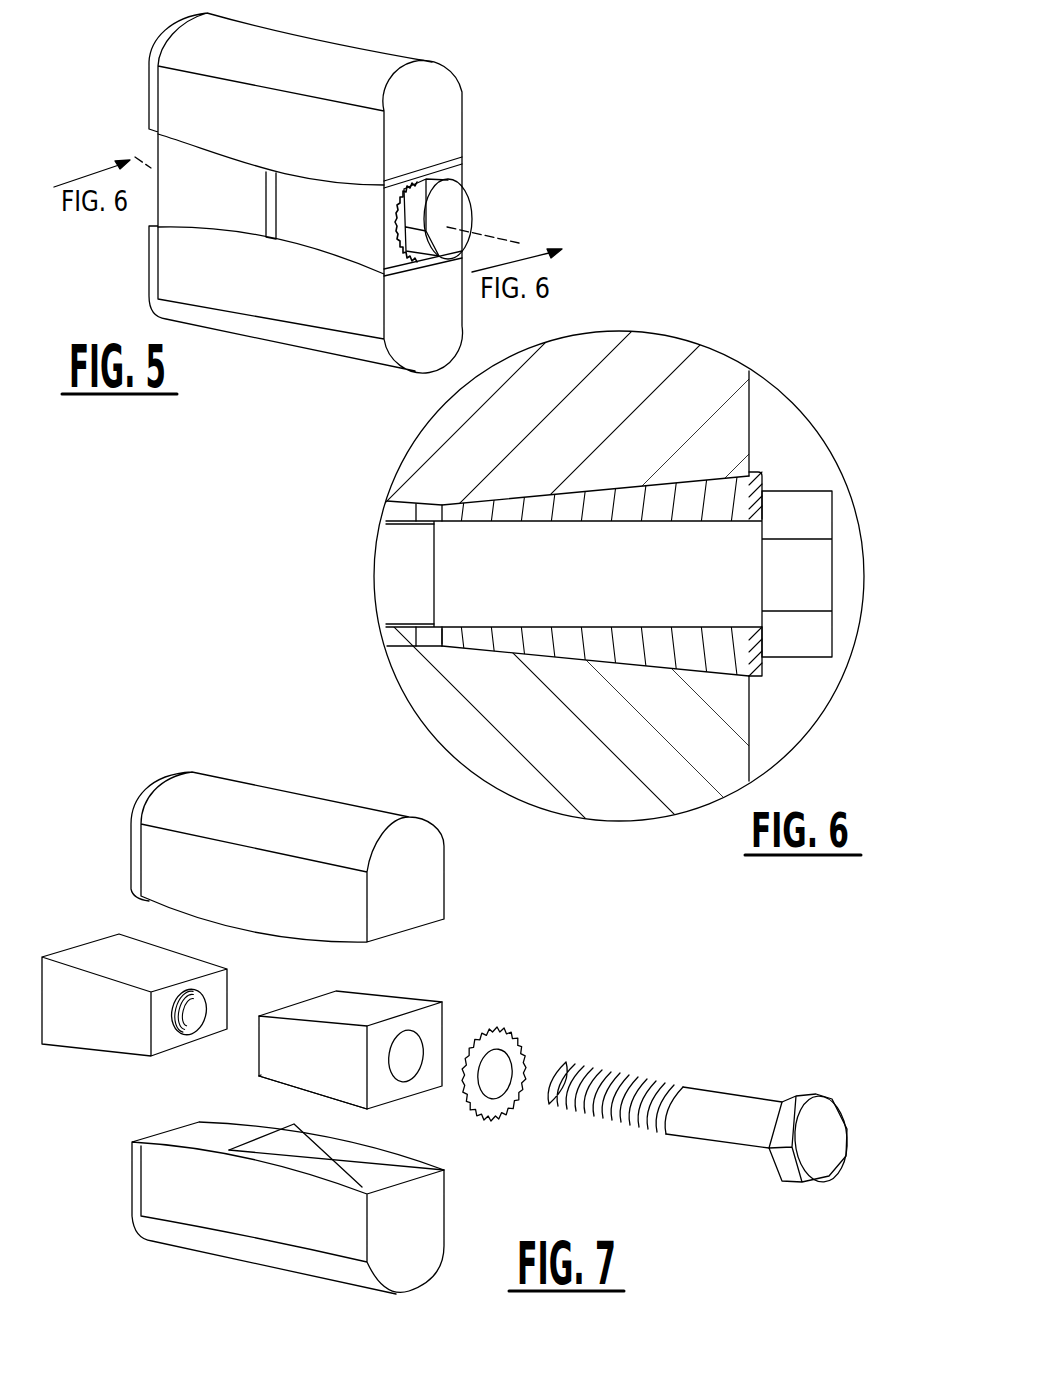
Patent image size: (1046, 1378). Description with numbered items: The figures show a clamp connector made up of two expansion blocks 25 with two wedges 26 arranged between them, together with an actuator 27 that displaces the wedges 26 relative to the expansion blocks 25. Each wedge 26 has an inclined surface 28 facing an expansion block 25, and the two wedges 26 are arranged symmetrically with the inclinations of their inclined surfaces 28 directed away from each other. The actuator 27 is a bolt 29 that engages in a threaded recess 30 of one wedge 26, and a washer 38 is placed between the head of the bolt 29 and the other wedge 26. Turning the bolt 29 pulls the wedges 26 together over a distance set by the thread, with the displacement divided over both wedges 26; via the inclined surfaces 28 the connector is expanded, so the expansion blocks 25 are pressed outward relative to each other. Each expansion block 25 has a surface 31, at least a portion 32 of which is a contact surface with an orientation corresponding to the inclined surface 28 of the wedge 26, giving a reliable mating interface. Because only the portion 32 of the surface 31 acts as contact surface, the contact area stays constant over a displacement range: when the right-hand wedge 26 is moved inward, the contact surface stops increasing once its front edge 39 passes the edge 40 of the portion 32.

In FIG. 5, the expansion block 25 is at (204, 109).
In FIG. 6, the expansion block 25 is at (467, 593).
In FIG. 7, the expansion block 25 is at (167, 853).
In FIG. 5, the wedge 26 is at (217, 200).
In FIG. 6, the wedge 26 is at (398, 513).
In FIG. 7, the wedge 26 is at (432, 1025).
In FIG. 5, the actuator 27 is at (487, 174).
In FIG. 6, the actuator 27 is at (632, 642).
In FIG. 7, the actuator 27 is at (699, 1095).
In FIG. 6, the inclined surface 28 is at (535, 532).
In FIG. 7, the inclined surface 28 is at (263, 1012).
In FIG. 5, the bolt 29 is at (452, 203).
In FIG. 6, the bolt 29 is at (787, 625).
In FIG. 7, the bolt 29 is at (737, 1115).
In FIG. 7, the threaded recess 30 is at (208, 1006).
In FIG. 6, the surface 31 is at (639, 585).
In FIG. 7, the surface 31 is at (256, 969).
In FIG. 6, the portion 32 is at (650, 485).
In FIG. 7, the portion 32 is at (215, 1143).
In FIG. 7, the washer 38 is at (518, 1060).
In FIG. 6, the front edge 39 is at (438, 647).
In FIG. 7, the front edge 39 is at (262, 1077).
In FIG. 6, the edge 40 is at (512, 653).
In FIG. 7, the edge 40 is at (303, 1162).